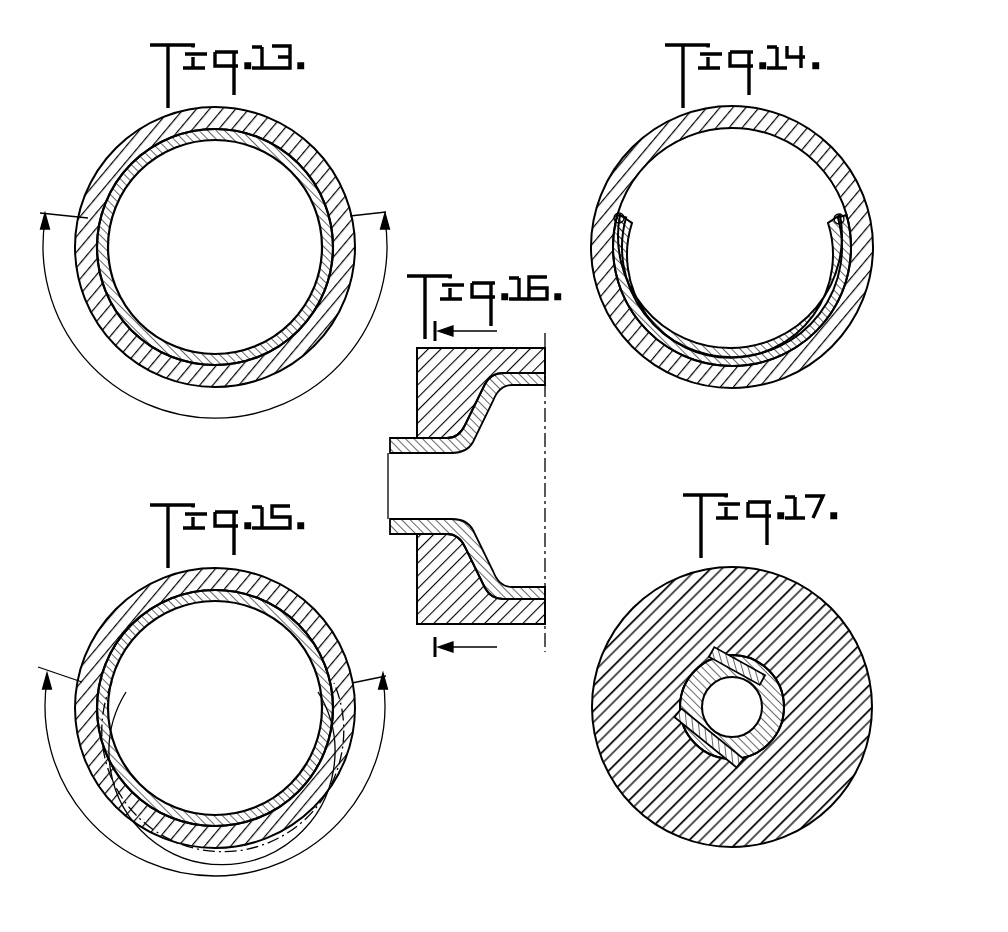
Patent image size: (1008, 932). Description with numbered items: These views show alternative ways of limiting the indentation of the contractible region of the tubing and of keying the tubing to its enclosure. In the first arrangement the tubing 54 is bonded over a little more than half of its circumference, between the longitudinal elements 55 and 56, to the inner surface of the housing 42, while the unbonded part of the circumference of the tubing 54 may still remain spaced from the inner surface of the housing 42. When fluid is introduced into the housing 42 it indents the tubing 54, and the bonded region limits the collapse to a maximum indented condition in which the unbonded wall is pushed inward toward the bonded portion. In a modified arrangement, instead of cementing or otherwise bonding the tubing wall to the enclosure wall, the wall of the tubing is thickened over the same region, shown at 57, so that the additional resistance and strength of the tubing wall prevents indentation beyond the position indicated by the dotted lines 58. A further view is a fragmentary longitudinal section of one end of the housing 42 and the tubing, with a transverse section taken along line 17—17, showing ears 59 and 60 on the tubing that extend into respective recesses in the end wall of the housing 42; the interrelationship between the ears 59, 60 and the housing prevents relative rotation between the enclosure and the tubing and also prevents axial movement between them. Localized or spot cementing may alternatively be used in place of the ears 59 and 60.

In FIG. 13, the housing 42 is at (323, 156).
In FIG. 14, the housing 42 is at (840, 182).
In FIG. 16, the housing 42 is at (512, 625).
In FIG. 17, the housing 42 is at (632, 795).
In FIG. 13, the tubing 54 is at (285, 174).
In FIG. 14, the tubing 54 is at (737, 284).
In FIG. 13, the longitudinal element 55 is at (69, 212).
In FIG. 14, the longitudinal element 55 is at (587, 233).
In FIG. 13, the longitudinal element 56 is at (363, 215).
In FIG. 14, the longitudinal element 56 is at (876, 231).
In FIG. 15, the thickened tubing wall 57 is at (222, 815).
In FIG. 15, the dotted lines 58 is at (187, 740).
In FIG. 16, the ear 59 is at (422, 423).
In FIG. 17, the ear 59 is at (734, 638).
In FIG. 16, the ear 60 is at (428, 545).
In FIG. 17, the ear 60 is at (740, 769).
In FIG. 16, the section line 17— 17 is at (445, 489).